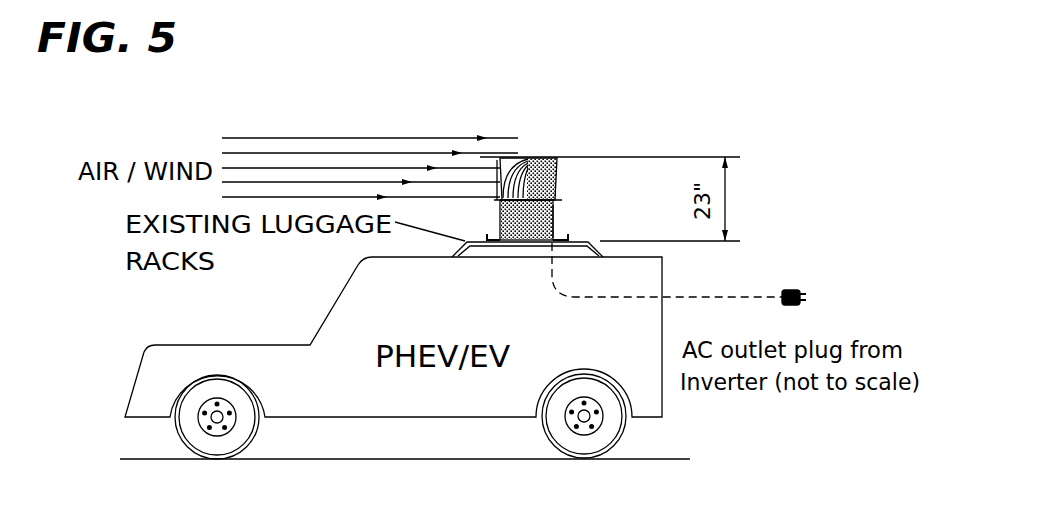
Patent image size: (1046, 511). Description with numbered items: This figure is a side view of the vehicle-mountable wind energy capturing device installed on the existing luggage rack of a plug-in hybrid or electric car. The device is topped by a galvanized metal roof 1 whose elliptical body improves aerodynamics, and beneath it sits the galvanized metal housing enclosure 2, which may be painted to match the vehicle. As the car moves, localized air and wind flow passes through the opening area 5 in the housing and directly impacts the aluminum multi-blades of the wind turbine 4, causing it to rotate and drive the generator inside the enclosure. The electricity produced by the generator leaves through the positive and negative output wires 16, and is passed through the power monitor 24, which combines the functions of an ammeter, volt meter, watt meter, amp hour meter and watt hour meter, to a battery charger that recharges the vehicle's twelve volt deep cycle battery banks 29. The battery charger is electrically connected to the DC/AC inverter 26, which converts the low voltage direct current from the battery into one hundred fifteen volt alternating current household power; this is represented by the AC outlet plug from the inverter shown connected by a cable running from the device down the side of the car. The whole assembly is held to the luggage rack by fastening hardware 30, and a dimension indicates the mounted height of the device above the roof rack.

The galvanized metal roof 1 is at (518, 156).
The housing enclosure 2 is at (557, 160).
The wind turbine 4 is at (510, 157).
The opening area 5 is at (500, 172).
The output wires 16 is at (560, 228).
The power monitor 24 is at (497, 200).
The DC/AC inverter 26 is at (558, 196).
The deep cycle battery banks 29 is at (567, 234).
The fastening hardware 30 is at (568, 238).